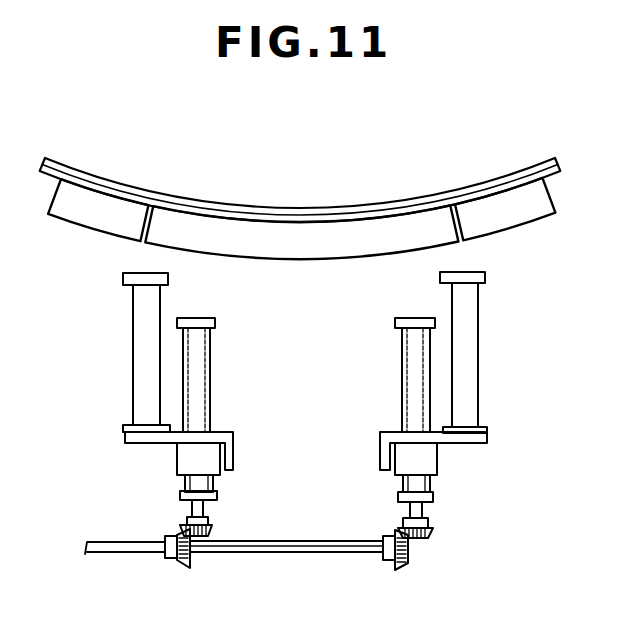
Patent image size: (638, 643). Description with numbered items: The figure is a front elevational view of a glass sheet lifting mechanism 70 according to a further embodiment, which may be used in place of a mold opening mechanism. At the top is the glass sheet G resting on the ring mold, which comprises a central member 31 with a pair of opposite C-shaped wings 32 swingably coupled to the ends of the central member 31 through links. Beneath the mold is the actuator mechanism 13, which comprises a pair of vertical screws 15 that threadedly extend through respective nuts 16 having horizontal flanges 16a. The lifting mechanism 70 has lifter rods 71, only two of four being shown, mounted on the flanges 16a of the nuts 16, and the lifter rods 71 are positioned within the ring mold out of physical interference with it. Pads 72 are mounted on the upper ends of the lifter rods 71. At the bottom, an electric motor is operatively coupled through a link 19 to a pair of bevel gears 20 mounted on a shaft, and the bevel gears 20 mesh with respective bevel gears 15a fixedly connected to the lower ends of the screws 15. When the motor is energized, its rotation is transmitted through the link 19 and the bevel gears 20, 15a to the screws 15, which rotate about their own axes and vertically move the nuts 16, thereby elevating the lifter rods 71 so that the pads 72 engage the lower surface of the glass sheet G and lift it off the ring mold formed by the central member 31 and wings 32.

The glass sheet G is at (422, 206).
The central member 31 is at (306, 238).
The C-shaped wings 32 is at (72, 212).
The pads 72 is at (127, 278).
The lifter rods 71 is at (140, 368).
The vertical screws 15 is at (197, 397).
The horizontal flanges 16a is at (130, 445).
The nuts 16 is at (185, 463).
The bevel gears 15a is at (202, 530).
The bevel gears 20 is at (188, 553).
The link 19 is at (137, 548).
The actuator mechanism 13 is at (303, 562).
The glass sheet lifting mechanism 70 is at (493, 348).